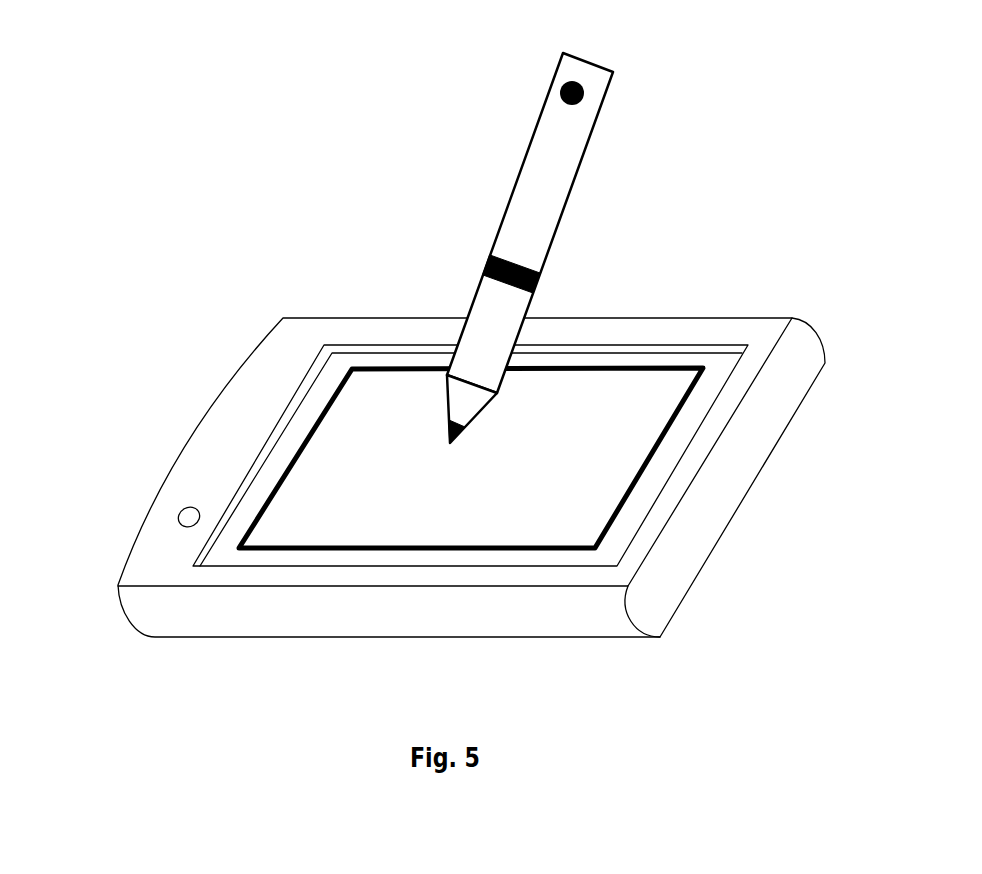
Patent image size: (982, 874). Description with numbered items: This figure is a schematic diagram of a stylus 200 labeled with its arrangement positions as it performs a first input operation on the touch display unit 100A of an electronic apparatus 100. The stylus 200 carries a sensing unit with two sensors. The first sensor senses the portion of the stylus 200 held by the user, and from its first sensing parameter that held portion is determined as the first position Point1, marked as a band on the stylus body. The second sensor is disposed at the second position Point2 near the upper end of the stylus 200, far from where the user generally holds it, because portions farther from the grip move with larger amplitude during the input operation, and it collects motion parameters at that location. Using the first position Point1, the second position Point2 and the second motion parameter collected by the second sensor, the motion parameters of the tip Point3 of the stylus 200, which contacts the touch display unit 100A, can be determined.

The electronic apparatus 100 is at (220, 467).
The touch display unit 100A is at (362, 440).
The stylus 200 is at (558, 223).
The first position Point1 is at (492, 253).
The second position Point2 is at (568, 86).
The tip Point3 is at (450, 443).